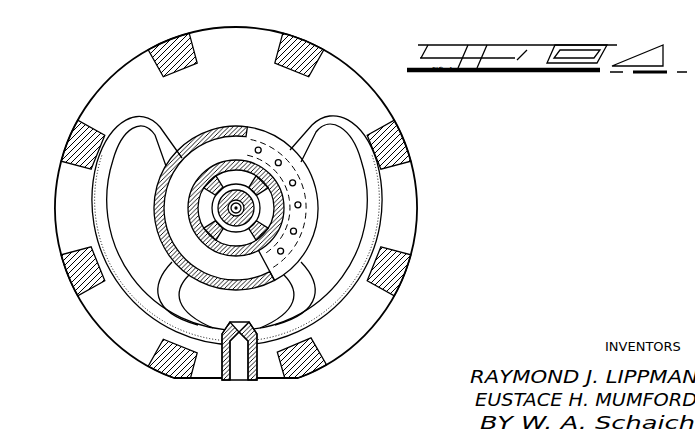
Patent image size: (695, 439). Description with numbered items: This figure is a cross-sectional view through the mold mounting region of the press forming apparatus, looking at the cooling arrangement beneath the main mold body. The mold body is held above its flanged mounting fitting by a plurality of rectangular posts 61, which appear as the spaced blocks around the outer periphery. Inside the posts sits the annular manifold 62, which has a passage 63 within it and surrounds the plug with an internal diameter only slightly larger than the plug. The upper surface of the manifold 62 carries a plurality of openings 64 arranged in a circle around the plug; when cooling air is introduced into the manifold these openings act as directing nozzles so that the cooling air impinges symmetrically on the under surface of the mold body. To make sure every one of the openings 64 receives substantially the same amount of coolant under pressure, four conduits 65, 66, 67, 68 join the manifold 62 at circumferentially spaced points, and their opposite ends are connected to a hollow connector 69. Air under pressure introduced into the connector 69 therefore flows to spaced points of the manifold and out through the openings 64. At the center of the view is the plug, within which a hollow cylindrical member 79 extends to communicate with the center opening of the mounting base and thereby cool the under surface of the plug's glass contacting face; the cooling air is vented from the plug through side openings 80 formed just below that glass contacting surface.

The rectangular posts 61 is at (284, 44).
The annular manifold 62 is at (300, 119).
The passage 63 is at (203, 150).
The openings 64 is at (301, 204).
The conduit 65 is at (375, 200).
The conduit 66 is at (97, 200).
The conduit 67 is at (318, 299).
The conduit 68 is at (157, 299).
The hollow connector 69 is at (225, 380).
The hollow cylindrical member 79 is at (203, 217).
The side openings 80 is at (202, 207).